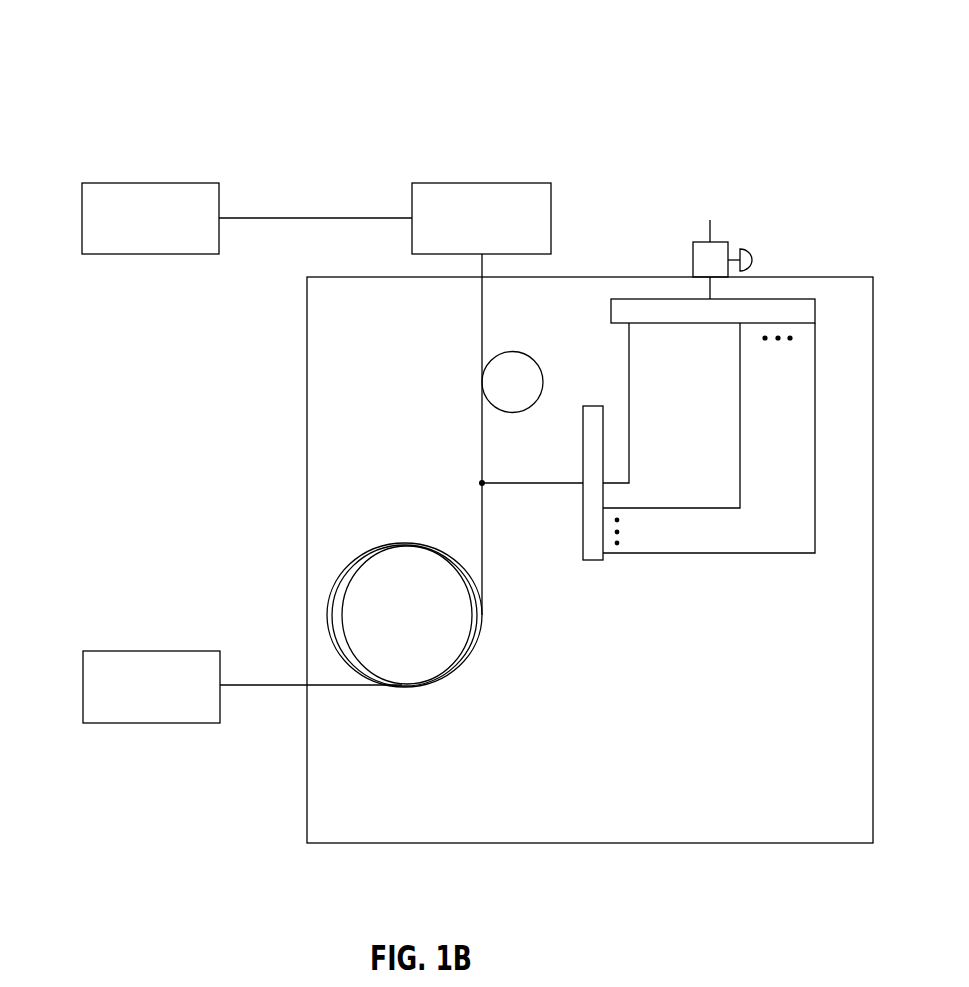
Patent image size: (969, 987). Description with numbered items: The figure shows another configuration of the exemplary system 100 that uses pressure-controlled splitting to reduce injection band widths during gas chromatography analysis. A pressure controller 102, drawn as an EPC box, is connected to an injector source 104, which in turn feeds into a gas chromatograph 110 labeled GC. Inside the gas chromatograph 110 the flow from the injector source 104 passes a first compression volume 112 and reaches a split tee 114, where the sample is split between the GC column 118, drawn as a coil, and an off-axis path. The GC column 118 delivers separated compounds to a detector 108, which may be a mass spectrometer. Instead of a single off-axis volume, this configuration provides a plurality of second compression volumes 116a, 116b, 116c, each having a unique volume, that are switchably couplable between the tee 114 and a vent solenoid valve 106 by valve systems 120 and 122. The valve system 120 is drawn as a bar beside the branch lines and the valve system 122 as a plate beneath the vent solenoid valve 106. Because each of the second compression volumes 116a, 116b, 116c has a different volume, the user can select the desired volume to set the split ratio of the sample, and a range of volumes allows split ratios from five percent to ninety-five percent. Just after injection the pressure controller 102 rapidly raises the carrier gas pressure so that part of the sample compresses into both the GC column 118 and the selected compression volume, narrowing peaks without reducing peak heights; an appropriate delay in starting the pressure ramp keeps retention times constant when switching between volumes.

The system 100 is at (122, 24).
The pressure controller 102 is at (152, 182).
The injector source 104 is at (480, 182).
The vent solenoid valve 106 is at (718, 242).
The detector 108 is at (150, 650).
The gas chromatograph 110 is at (592, 845).
The first compression volume 112 is at (527, 349).
The split tee 114 is at (485, 486).
The second compression volume 116a is at (630, 402).
The second compression volume 116b is at (683, 510).
The second compression volume 116c is at (683, 555).
The GC column 118 is at (403, 690).
The valve system 120 is at (593, 560).
The valve system 122 is at (775, 298).